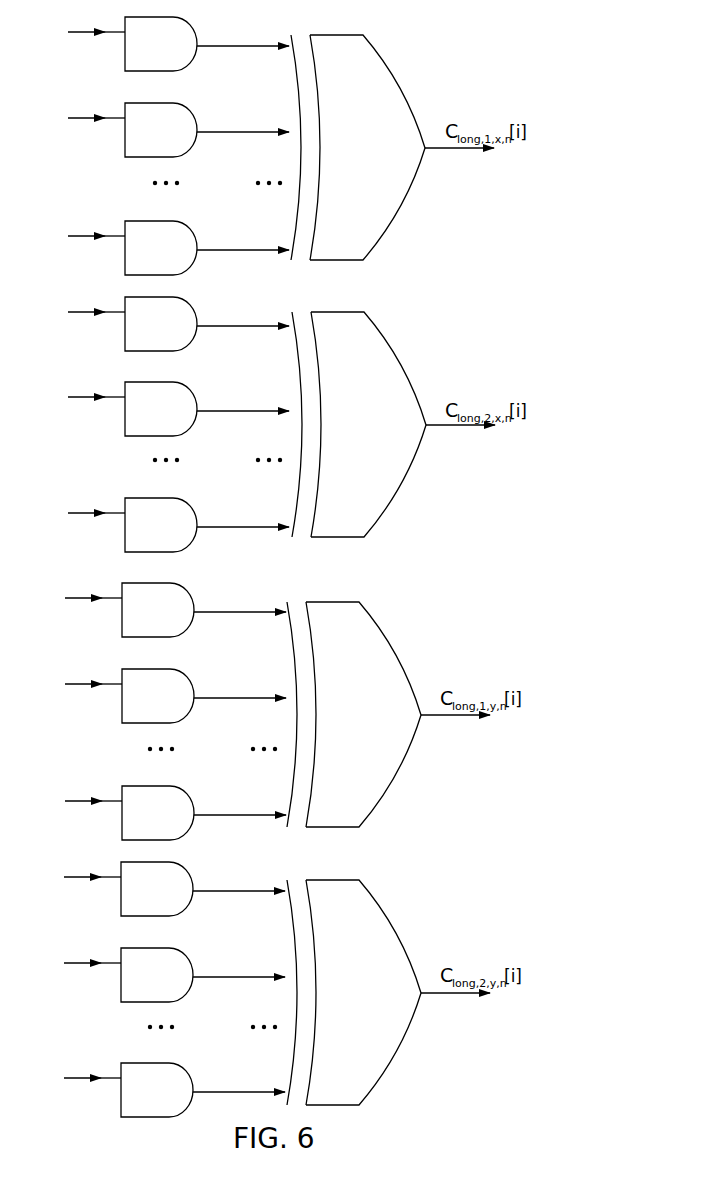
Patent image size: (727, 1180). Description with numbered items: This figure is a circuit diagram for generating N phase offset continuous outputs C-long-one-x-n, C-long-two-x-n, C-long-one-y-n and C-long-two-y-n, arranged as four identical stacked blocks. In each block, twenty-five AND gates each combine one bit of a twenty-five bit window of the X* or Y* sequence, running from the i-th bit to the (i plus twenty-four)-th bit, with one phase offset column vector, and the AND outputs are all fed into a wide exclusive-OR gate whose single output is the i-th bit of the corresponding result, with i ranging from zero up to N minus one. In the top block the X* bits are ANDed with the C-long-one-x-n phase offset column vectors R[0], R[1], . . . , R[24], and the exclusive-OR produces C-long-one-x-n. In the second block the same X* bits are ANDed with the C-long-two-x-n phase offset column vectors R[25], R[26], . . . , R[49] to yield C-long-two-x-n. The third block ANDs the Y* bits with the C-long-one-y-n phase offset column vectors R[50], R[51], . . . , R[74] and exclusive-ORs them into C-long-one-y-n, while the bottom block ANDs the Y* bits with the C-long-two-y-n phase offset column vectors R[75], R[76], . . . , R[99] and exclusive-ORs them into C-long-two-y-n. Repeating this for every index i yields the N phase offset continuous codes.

The C_long,1,x,n phase offset column vector, element zero 0 is at (177, 40).
The C_long,1,x,n phase offset column vector, element one 1 is at (176, 126).
The C_long,1,x,n phase offset column vector, element twenty-four 24 is at (169, 244).
The C_long,2,x,n phase offset column vector, element twenty-five 25 is at (177, 320).
The C_long,2,x,n phase offset column vector, element twenty-six 26 is at (176, 405).
The C_long,2,x,n phase offset column vector, element forty-nine 49 is at (169, 521).
The C_long,1,y,n phase offset column vector, element fifty 50 is at (172, 606).
The C_long,1,y,n phase offset column vector, element fifty-one 51 is at (171, 692).
The C_long,1,y,n phase offset column vector, element seventy-four 74 is at (165, 809).
The C_long,2,y,n phase offset column vector, element seventy-five 75 is at (172, 885).
The C_long,2,y,n phase offset column vector, element seventy-six 76 is at (171, 971).
The C_long,2,y,n phase offset column vector, element ninety-nine 99 is at (164, 1086).